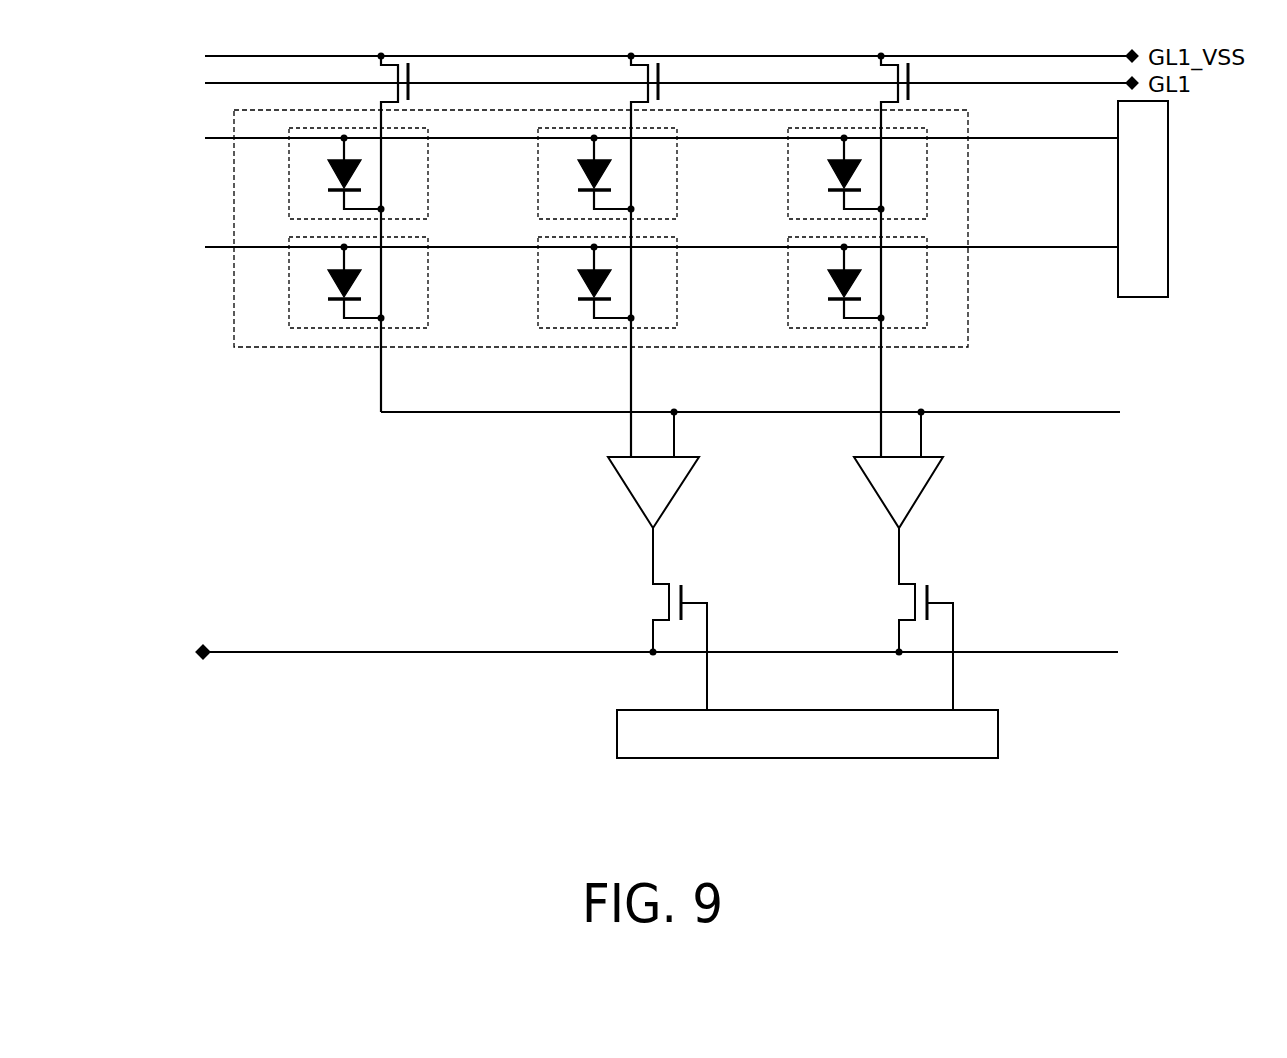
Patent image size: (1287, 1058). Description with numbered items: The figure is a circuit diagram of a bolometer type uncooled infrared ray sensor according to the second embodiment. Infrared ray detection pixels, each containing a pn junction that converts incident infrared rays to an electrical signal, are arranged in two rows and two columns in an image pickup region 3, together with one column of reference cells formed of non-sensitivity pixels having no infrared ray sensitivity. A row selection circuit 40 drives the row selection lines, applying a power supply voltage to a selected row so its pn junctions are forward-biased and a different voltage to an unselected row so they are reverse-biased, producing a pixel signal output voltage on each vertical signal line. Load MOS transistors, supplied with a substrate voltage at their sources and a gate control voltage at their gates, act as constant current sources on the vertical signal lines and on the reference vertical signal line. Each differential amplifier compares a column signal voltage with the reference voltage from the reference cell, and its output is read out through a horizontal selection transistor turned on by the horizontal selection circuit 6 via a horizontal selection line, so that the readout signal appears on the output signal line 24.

The image pickup region 3 is at (228, 122).
The row selection circuit 40 is at (1140, 298).
The horizontal selection circuit 6 is at (1000, 735).
The output signal line 24 is at (318, 655).